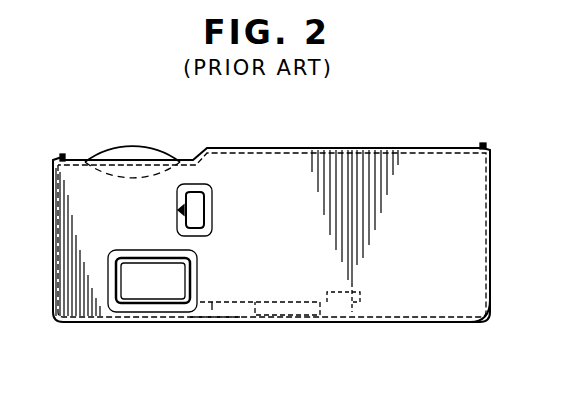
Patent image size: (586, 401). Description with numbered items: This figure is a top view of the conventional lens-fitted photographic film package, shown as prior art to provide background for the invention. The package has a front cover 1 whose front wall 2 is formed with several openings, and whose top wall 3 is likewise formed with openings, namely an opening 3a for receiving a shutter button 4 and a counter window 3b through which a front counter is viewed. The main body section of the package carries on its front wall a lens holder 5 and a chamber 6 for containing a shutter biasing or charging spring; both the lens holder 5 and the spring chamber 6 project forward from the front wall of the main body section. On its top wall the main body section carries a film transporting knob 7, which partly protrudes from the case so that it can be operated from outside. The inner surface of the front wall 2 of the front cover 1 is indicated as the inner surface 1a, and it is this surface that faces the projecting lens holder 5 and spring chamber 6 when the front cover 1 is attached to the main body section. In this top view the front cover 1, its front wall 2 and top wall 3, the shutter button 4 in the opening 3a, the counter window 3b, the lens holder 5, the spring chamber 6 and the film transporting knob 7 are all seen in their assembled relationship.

The front cover 1 is at (350, 142).
The inner surface of the front wall 1a is at (403, 325).
The front wall 2 is at (460, 325).
The top wall 3 is at (472, 230).
The opening 3a is at (128, 268).
The counter window 3b is at (215, 205).
The shutter button 4 is at (150, 292).
The lens holder 5 is at (330, 320).
The chamber 6 is at (213, 324).
The film transporting knob 7 is at (131, 156).